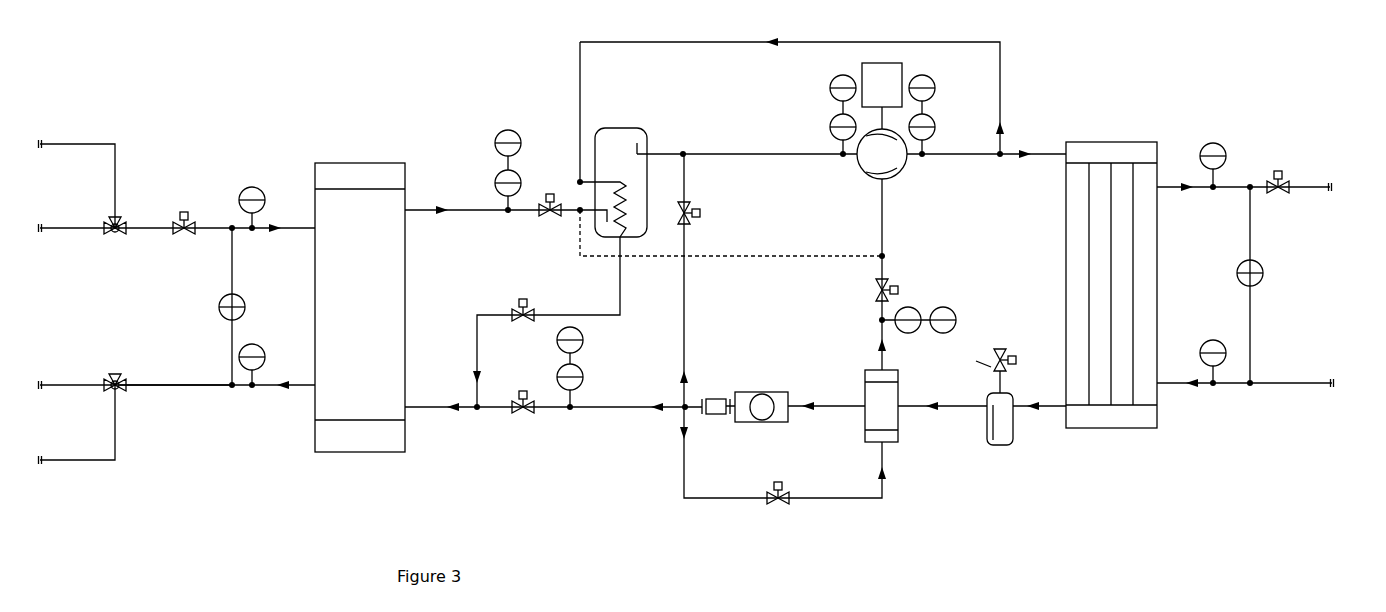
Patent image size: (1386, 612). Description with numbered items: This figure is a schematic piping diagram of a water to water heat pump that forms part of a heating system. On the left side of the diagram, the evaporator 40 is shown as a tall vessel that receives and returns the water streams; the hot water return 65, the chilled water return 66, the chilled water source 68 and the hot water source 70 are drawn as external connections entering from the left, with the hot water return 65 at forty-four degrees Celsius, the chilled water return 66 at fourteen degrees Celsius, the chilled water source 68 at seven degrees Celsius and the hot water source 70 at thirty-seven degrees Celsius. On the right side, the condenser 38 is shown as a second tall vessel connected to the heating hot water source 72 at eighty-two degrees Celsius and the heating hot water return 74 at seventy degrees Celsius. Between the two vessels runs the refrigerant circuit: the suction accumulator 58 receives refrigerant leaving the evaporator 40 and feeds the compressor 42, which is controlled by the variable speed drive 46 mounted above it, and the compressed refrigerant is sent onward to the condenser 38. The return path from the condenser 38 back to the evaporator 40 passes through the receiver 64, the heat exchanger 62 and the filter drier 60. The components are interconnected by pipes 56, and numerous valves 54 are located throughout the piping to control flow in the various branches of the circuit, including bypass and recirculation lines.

The condenser 38 is at (1111, 285).
The evaporator 40 is at (360, 307).
The compressor 42 is at (882, 154).
The variable speed drive 46 is at (882, 96).
The valves 54 is at (696, 347).
The pipes 56 is at (197, 388).
The suction accumulator 58 is at (613, 182).
The filter drier 60 is at (763, 395).
The heat exchanger 62 is at (881, 406).
The receiver 64 is at (1003, 446).
The hot water return 65 is at (59, 181).
The chilled water return 66 is at (159, 228).
The chilled water source 68 is at (159, 385).
The hot water source 70 is at (59, 427).
The heating hot water source 72 is at (1258, 187).
The heating hot water return 74 is at (1262, 383).